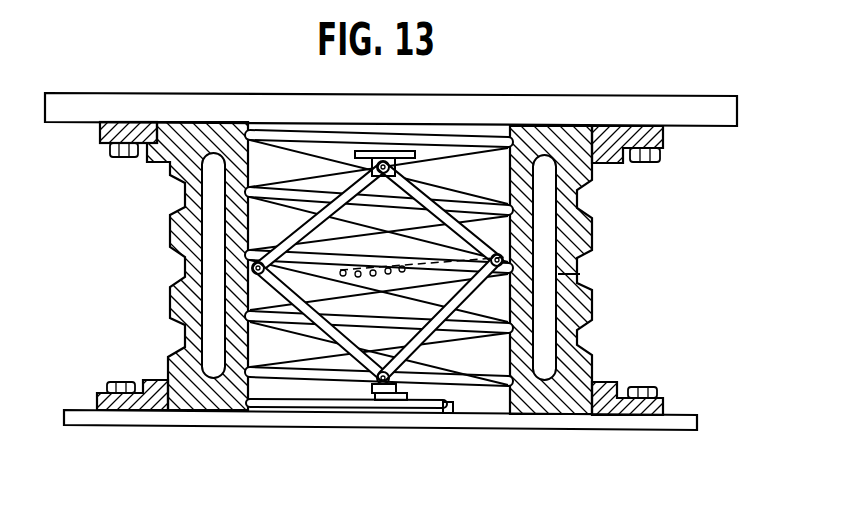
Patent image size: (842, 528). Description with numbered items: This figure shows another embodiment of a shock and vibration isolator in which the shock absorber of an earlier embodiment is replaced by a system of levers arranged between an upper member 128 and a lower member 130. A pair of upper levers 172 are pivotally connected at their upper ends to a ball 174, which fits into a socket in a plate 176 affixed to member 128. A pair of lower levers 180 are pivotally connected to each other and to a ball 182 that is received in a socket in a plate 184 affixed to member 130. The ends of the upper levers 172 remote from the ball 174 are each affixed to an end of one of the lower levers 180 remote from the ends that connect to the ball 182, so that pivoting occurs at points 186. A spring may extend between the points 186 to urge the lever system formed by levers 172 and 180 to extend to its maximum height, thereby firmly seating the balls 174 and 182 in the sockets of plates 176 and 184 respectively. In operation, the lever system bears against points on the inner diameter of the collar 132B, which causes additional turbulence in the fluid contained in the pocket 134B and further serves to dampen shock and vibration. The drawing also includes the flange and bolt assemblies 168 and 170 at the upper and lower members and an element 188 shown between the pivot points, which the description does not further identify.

The member 128 is at (562, 106).
The member 130 is at (551, 421).
The collar 132B is at (594, 230).
The pocket 134B is at (557, 332).
The upper mounting flange and bolts 168 is at (666, 143).
The lower mounting flange and bolts 170 is at (663, 406).
The upper levers 172 is at (315, 212).
The ball 174 is at (358, 170).
The plate 176 is at (405, 150).
The lower levers 180 is at (322, 334).
The ball 182 is at (378, 395).
The plate 184 is at (406, 402).
The points 186 is at (252, 268).
The spring element 188 is at (350, 273).